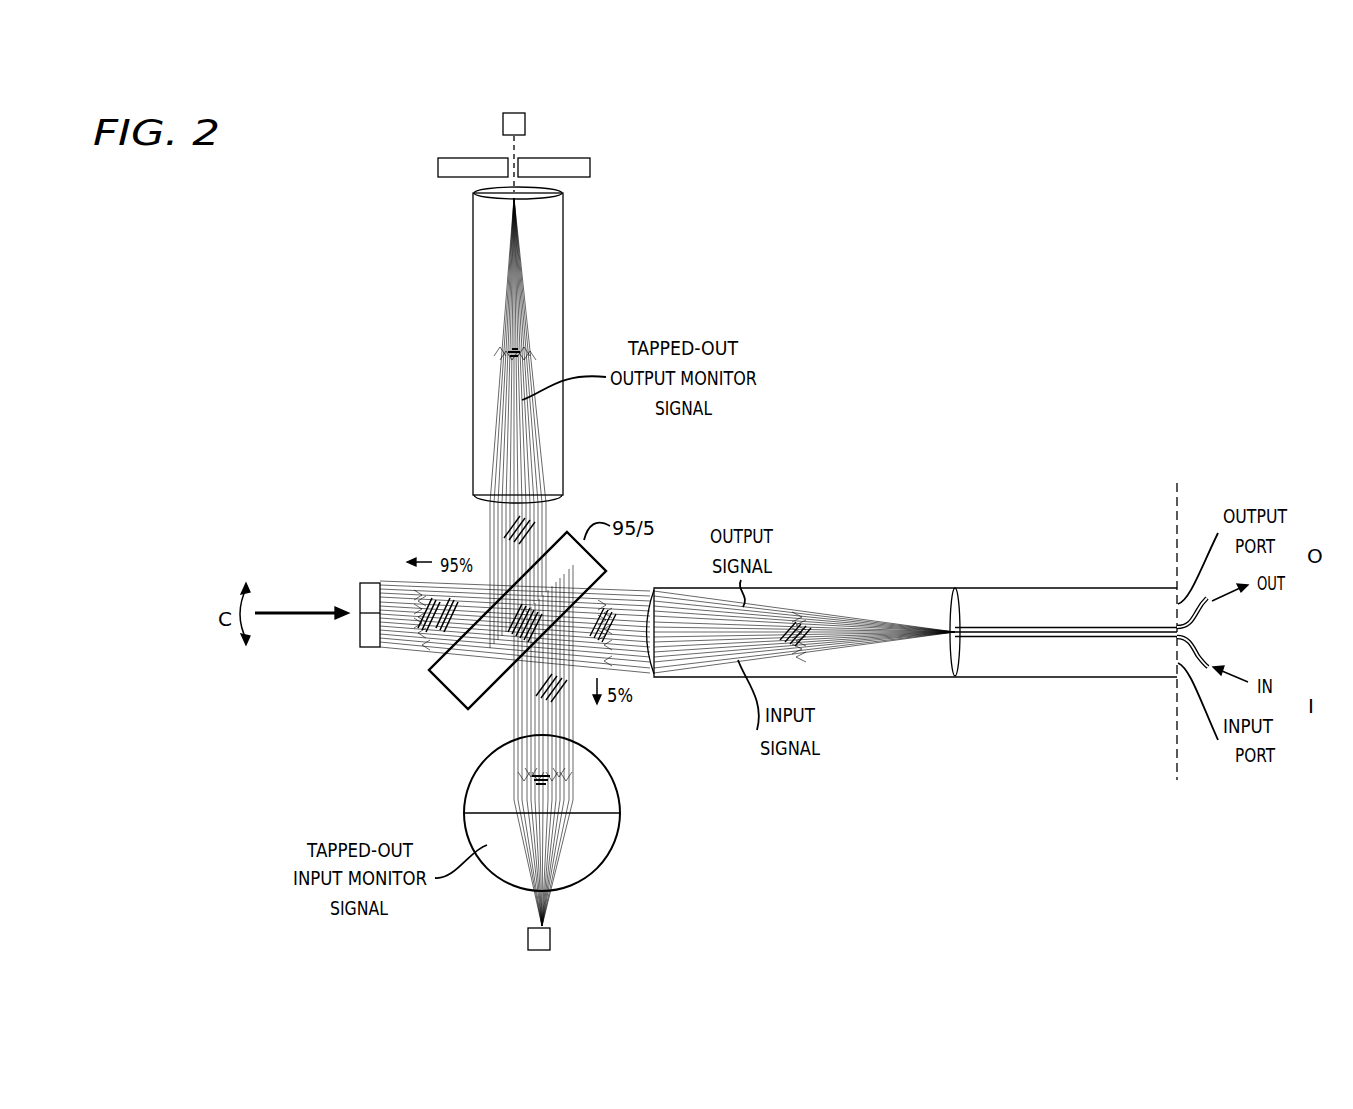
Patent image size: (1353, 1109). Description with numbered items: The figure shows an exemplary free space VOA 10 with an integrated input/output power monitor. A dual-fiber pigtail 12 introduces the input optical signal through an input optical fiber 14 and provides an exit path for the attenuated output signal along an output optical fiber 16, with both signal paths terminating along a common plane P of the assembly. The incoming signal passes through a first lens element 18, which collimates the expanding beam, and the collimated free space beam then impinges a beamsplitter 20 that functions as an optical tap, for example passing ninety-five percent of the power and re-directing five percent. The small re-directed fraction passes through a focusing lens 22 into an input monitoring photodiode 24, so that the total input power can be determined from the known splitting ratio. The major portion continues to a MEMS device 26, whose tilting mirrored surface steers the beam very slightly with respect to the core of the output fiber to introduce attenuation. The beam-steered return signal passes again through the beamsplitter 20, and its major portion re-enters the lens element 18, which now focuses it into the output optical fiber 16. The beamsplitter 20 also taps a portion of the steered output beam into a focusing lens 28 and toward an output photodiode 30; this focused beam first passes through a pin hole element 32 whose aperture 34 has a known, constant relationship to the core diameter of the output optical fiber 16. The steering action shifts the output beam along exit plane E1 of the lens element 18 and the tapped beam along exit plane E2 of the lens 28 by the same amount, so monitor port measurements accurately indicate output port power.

The free space VOA 10 is at (202, 222).
The dual-fiber pigtail 12 is at (1009, 602).
The input optical fiber 14 is at (1209, 654).
The output optical fiber 16 is at (1209, 612).
The first lens element 18 is at (870, 600).
The beamsplitter 20 is at (458, 681).
The focusing lens 22 is at (603, 787).
The input monitoring photodiode 24 is at (550, 939).
The MEMS device 26 is at (360, 590).
The focusing lens 28 is at (473, 403).
The output photodiode 30 is at (503, 124).
The pin hole element 32 is at (458, 176).
The aperture 34 is at (516, 162).
The exit plane of lens element 18 E1 is at (955, 678).
The exit plane of second lens element 28 E2 is at (556, 187).
The common plane P is at (1174, 512).